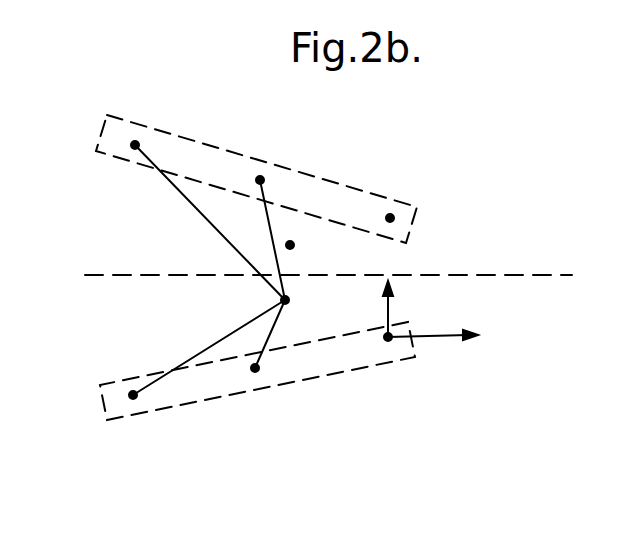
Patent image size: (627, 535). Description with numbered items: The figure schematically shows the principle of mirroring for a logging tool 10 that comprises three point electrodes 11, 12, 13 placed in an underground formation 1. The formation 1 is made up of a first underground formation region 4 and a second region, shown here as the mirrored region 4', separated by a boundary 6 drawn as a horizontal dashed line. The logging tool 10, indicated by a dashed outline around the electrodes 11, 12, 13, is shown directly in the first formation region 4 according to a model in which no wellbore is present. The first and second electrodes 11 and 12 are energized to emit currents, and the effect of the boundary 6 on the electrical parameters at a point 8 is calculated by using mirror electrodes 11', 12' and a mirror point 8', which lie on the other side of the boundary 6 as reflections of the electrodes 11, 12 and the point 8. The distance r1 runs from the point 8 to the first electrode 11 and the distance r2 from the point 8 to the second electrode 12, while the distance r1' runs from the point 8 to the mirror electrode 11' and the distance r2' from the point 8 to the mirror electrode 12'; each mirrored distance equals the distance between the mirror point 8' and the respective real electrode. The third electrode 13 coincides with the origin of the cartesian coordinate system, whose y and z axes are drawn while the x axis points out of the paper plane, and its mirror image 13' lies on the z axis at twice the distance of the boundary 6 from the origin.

The underground formation 1 is at (604, 289).
The first underground formation region 4 is at (509, 332).
The upper half-space / region 4' is at (506, 184).
The boundary 6 is at (532, 274).
The point 8 is at (308, 292).
The mirror point 8' is at (314, 252).
The logging tool 10 is at (205, 403).
The first point electrode 11 is at (157, 419).
The second point electrode 12 is at (293, 386).
The third point electrode 13 is at (430, 334).
The mirror electrode 11' is at (161, 122).
The mirror electrode 12' is at (288, 157).
The mirror image of the electrode 13' is at (416, 194).
The distance between point and first electrode r1 is at (209, 347).
The distance between point and second electrode r2 is at (286, 334).
The distance between point and first mirror electrode r1' is at (203, 222).
The distance between point and second mirror electrode r2' is at (254, 240).